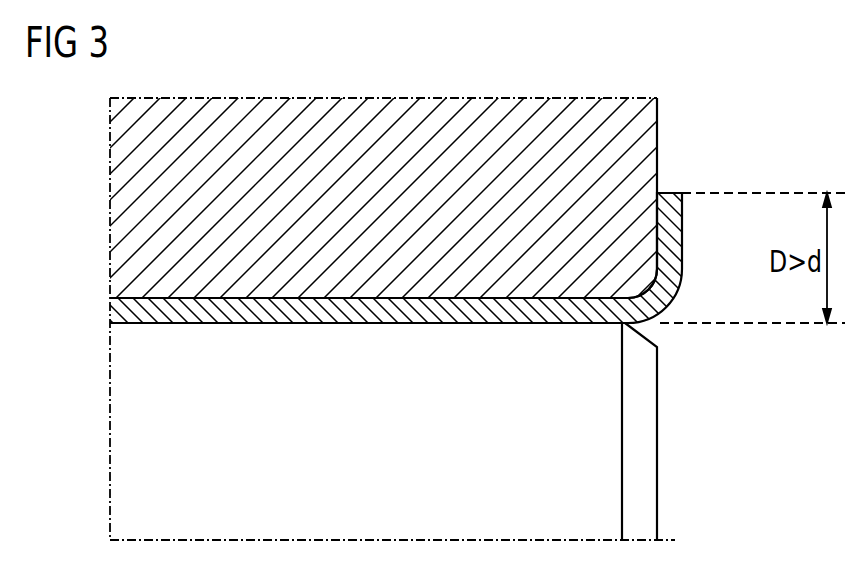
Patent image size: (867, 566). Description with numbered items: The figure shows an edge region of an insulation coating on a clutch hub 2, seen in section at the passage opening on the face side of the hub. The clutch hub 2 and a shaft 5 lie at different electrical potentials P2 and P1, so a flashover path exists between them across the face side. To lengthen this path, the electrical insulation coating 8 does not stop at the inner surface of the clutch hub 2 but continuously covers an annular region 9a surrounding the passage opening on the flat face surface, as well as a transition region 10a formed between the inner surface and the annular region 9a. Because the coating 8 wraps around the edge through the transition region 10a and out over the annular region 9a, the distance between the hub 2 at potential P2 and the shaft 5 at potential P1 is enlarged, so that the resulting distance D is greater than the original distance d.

The clutch hub 2 is at (122, 250).
The electrical insulation coating 8 is at (122, 310).
The annular region 9a is at (670, 220).
The transition region 10a is at (652, 302).
The shaft 5 is at (122, 398).
The electrical potential P1 is at (122, 460).
The electrical potential P2 is at (122, 202).